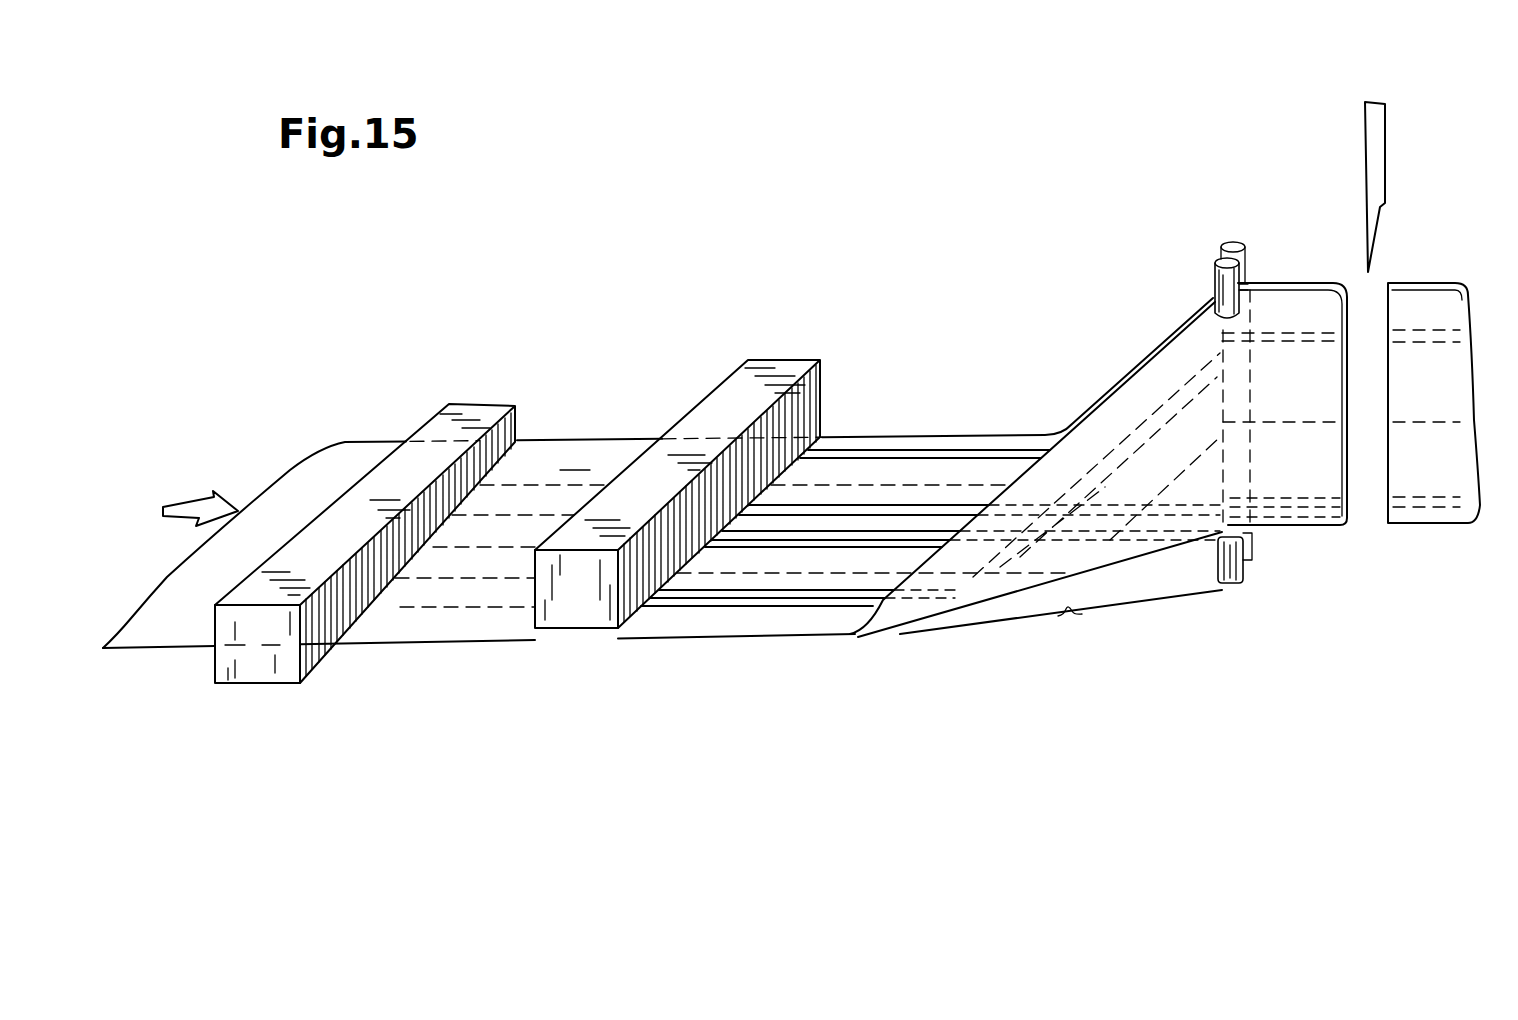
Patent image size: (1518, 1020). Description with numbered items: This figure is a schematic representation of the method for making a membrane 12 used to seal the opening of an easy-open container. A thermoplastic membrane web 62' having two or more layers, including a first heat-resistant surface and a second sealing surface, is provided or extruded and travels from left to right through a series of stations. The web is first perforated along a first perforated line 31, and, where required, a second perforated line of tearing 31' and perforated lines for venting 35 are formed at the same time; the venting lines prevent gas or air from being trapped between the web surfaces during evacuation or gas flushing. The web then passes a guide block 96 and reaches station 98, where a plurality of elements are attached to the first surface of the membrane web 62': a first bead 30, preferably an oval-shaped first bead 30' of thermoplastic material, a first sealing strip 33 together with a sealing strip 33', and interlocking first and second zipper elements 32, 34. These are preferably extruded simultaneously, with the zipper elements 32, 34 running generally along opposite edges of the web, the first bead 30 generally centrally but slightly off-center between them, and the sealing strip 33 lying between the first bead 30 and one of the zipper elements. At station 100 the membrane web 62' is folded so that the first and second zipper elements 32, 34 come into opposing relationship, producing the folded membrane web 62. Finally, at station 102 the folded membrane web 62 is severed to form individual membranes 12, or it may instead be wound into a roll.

The membrane 12 is at (1477, 490).
The first bead 30 is at (1016, 526).
The oval-shaped first bead 30' is at (1281, 406).
The first perforated line 31 is at (919, 606).
The second perforated line of tearing 31' is at (434, 628).
The first zipper element 32 is at (1000, 449).
The first sealing strip 33 is at (1039, 498).
The sealing strip 33' is at (807, 615).
The second zipper element 34 is at (685, 592).
The perforated line for venting 35 is at (535, 483).
The folded membrane web 62 is at (1314, 412).
The thermoplastic membrane web 62' is at (659, 475).
The first guide block 96 is at (242, 672).
The extrusion station 98 is at (580, 605).
The folding station 100 is at (1040, 594).
The severing station 102 is at (1385, 125).